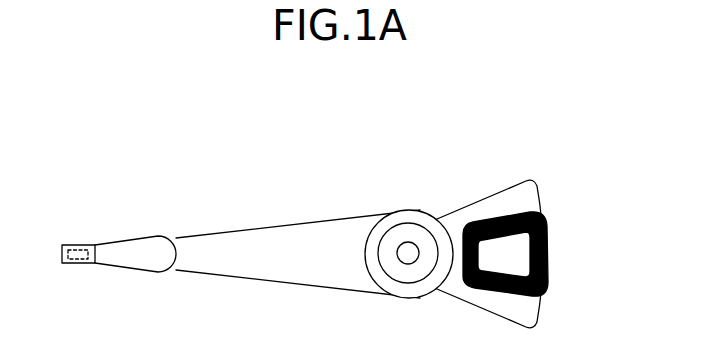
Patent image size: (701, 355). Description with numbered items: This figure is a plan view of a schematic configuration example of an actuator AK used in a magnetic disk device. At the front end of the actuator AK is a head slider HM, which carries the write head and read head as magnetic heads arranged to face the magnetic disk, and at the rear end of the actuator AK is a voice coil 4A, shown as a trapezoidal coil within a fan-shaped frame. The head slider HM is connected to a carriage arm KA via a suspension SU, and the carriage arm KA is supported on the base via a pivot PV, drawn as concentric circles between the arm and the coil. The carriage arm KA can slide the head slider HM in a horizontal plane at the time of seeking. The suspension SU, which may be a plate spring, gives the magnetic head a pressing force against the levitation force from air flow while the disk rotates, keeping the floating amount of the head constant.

The actuator AK is at (316, 116).
The head slider HM is at (81, 247).
The suspension SU is at (128, 236).
The carriage arm KA is at (282, 220).
The pivot PV is at (402, 225).
The voice coil 4A is at (547, 238).